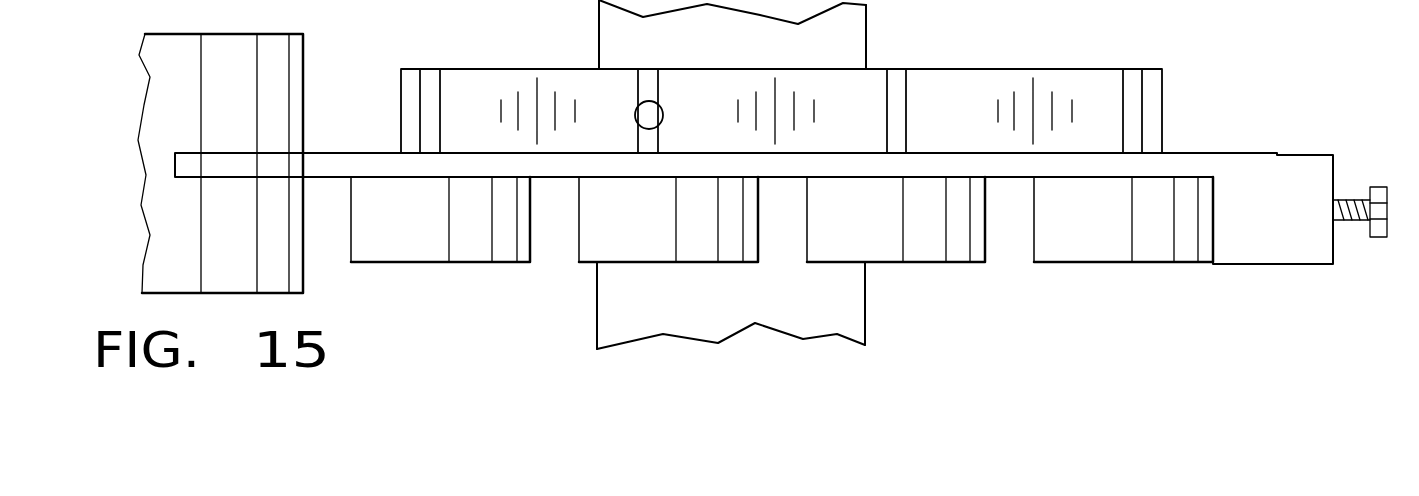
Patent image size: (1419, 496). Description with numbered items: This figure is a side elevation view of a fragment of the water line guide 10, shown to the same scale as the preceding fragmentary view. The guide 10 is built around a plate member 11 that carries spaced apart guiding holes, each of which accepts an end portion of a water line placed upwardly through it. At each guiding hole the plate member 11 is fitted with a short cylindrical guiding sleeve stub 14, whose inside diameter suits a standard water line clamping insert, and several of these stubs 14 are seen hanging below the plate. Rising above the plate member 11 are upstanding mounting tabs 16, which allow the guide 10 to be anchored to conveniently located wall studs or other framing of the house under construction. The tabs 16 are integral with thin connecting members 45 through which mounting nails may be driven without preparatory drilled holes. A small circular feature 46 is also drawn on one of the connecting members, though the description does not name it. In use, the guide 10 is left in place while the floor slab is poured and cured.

The water line guide 10 is at (762, 174).
The plate member 11 is at (935, 153).
The cylindrical guiding sleeve stub 14 is at (368, 243).
The mounting tab 16 is at (1082, 69).
The connecting member 45 is at (433, 80).
The pivot pin 46 is at (652, 113).